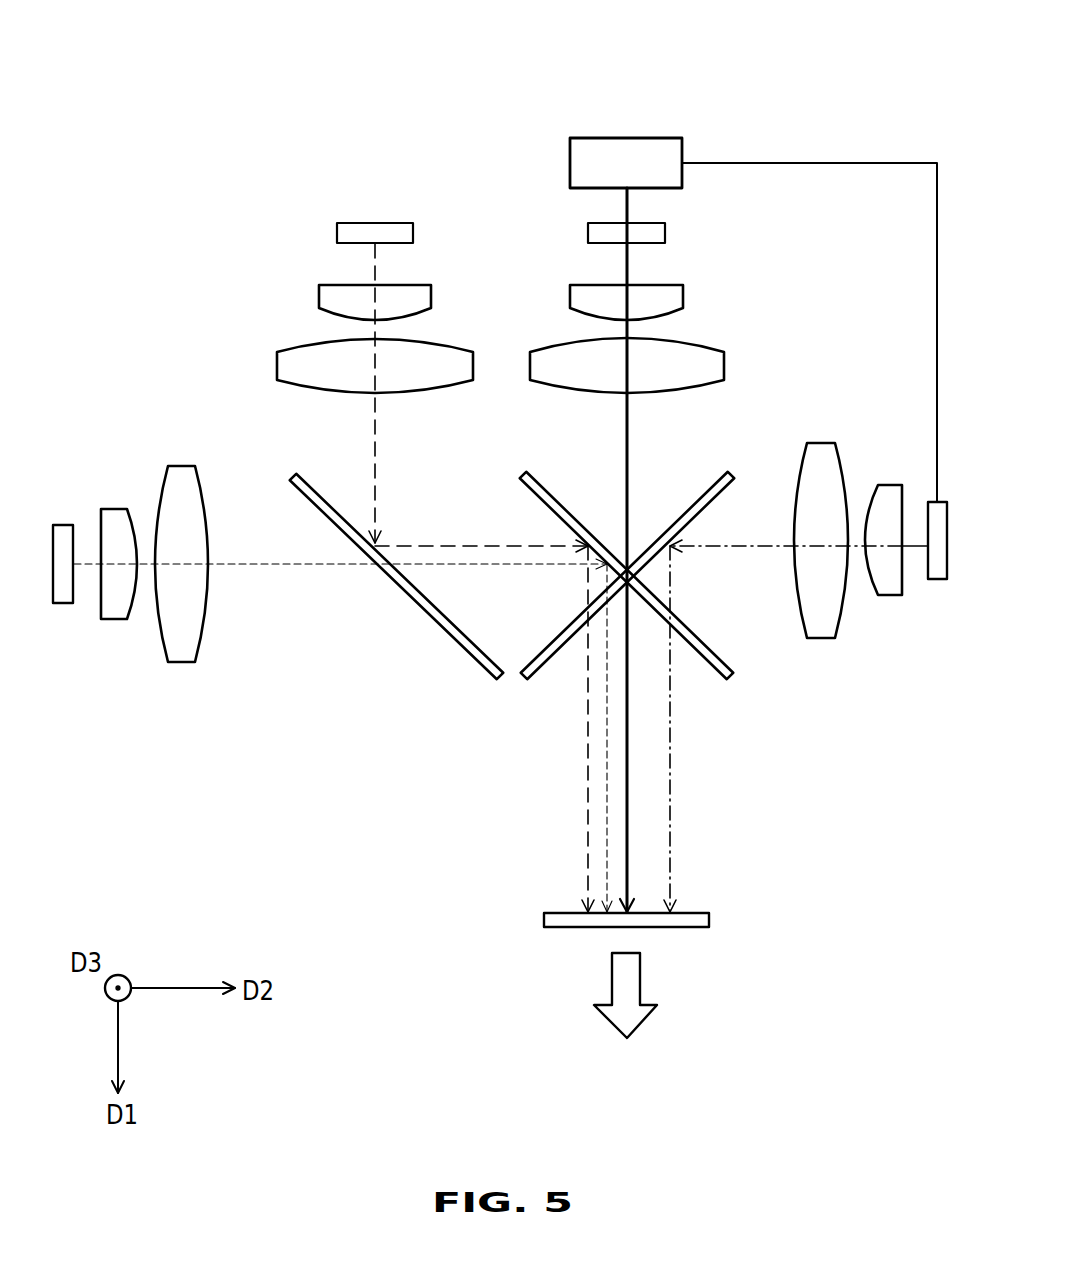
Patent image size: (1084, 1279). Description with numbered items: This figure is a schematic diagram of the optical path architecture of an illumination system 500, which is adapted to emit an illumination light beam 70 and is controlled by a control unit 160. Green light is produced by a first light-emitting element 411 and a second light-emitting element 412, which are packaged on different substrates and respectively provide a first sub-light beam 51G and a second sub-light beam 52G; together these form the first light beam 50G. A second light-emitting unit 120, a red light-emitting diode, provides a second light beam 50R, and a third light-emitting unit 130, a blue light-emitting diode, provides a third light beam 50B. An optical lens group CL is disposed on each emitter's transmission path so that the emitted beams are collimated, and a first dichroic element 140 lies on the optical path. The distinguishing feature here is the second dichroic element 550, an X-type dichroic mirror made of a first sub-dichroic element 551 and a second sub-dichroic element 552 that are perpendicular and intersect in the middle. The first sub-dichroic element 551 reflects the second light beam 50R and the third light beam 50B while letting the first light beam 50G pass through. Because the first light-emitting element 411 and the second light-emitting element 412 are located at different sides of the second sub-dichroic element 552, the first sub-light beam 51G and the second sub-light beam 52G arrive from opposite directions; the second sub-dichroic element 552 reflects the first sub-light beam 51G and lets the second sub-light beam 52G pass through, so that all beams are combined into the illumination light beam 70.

The control unit 160 is at (611, 138).
The second light-emitting element 412 is at (667, 233).
The second light-emitting unit 120 is at (335, 233).
The first light-emitting element 411 is at (940, 580).
The third light-emitting unit 130 is at (60, 605).
The optical lens group CL is at (321, 340).
The first dichroic element 140 is at (314, 506).
The second dichroic element 550 is at (420, 391).
The first sub-dichroic element 551 is at (543, 506).
The second sub-dichroic element 552 is at (710, 506).
The second light beam 50R is at (377, 429).
The third light beam 50B is at (257, 566).
The first light beam 50G is at (494, 459).
The first sub-light beam 51G is at (672, 840).
The second sub-light beam 52G is at (629, 431).
The illumination light beam 70 is at (641, 980).
The illumination system 500 is at (928, 1110).